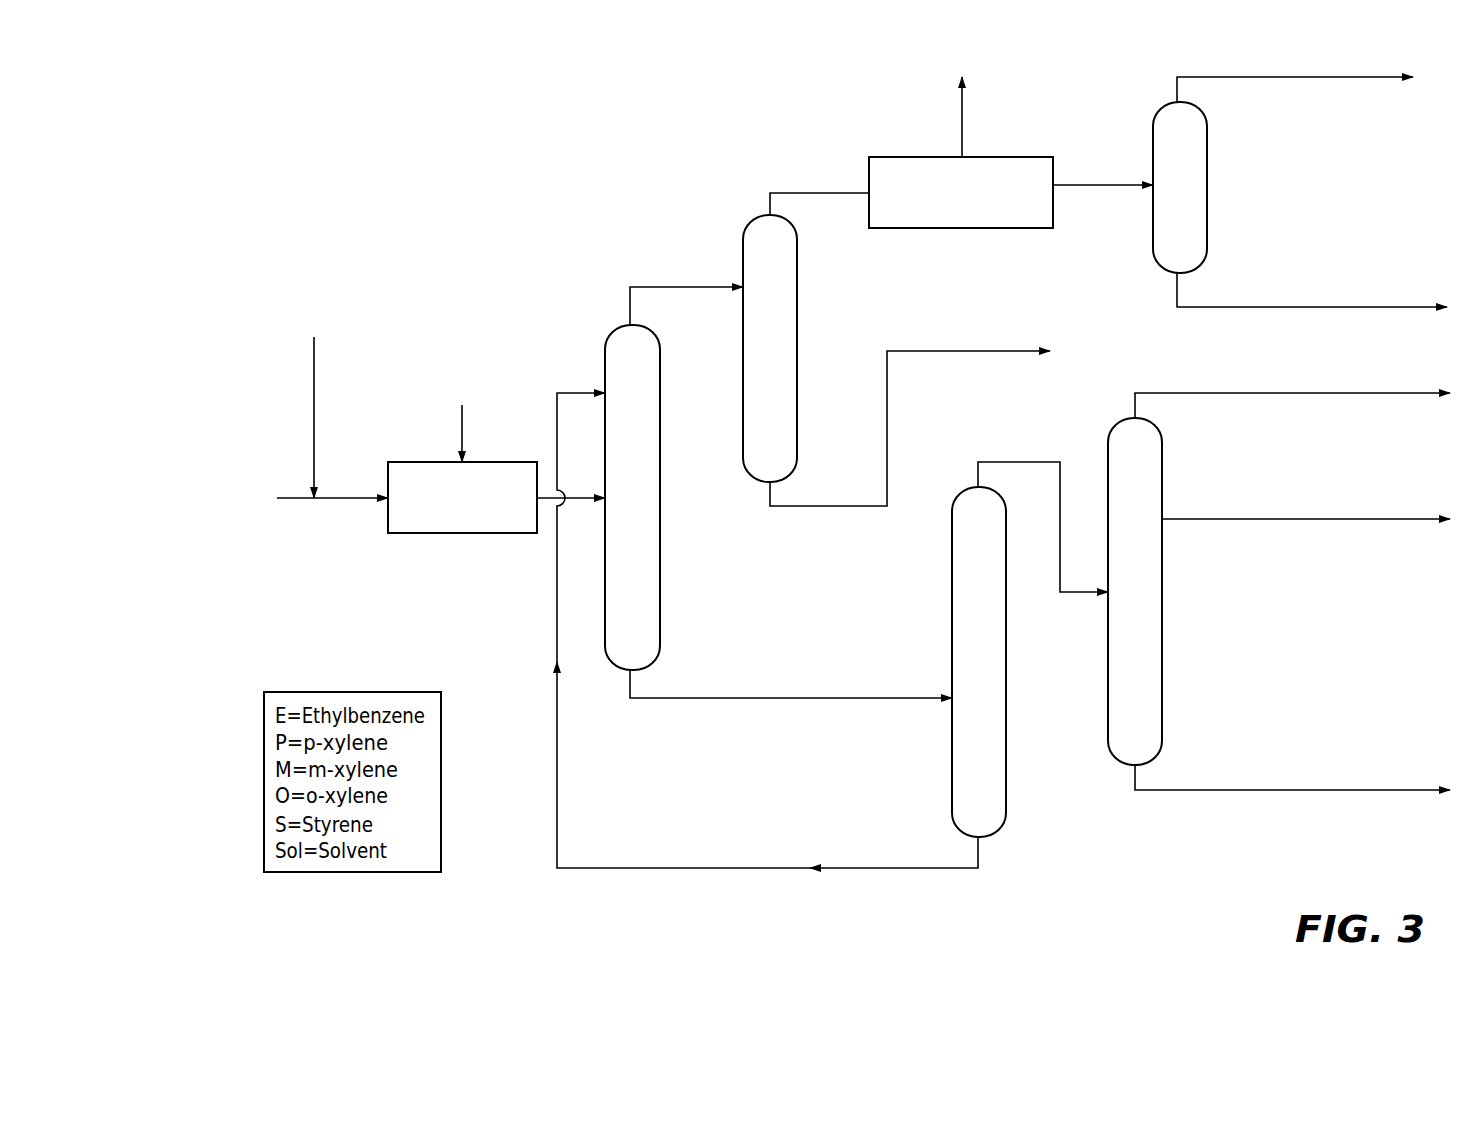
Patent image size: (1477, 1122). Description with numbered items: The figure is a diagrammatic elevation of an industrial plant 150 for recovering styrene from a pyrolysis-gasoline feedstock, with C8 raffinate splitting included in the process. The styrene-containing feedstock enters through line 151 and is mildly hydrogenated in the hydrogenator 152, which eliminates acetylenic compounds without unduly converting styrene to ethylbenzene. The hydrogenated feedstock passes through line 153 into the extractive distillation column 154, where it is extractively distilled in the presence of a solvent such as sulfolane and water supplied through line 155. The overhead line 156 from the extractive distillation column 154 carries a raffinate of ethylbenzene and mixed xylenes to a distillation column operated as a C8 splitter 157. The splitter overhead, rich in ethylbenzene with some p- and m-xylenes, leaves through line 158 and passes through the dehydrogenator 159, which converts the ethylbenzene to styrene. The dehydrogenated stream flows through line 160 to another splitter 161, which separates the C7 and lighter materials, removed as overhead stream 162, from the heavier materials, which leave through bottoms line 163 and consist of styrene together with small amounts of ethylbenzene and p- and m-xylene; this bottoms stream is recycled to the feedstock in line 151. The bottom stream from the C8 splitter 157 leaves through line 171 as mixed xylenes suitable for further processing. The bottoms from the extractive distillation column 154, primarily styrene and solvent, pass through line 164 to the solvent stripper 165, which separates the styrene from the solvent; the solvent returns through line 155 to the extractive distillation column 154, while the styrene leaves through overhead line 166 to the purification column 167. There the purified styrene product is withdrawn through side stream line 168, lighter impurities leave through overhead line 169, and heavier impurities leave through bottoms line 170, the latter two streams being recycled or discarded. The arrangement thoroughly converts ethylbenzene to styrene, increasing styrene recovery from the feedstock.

The plant 150 is at (360, 195).
The feedstock line 151 is at (298, 500).
The hydrogenator 152 is at (424, 534).
The hydrogenated feedstock line 153 is at (575, 500).
The extractive distillation column 154 is at (660, 583).
The solvent line 155 is at (559, 796).
The overhead line 156 is at (629, 310).
The C8 splitter 157 is at (797, 408).
The splitter overhead line 158 is at (822, 195).
The dehydrogenator 159 is at (925, 156).
The dehydrogenated stream line 160 is at (1100, 195).
The splitter 161 is at (1207, 162).
The overhead stream 162 is at (1208, 79).
The bottoms line 163 is at (313, 383).
The bottom stream line 164 is at (686, 700).
The solvent stripper 165 is at (950, 754).
The overhead line 166 is at (990, 462).
The purification column 167 is at (1162, 690).
The side stream line 168 is at (1390, 521).
The overhead line 169 is at (1392, 395).
The bottoms line 170 is at (1382, 792).
The bottom stream line 171 is at (962, 353).